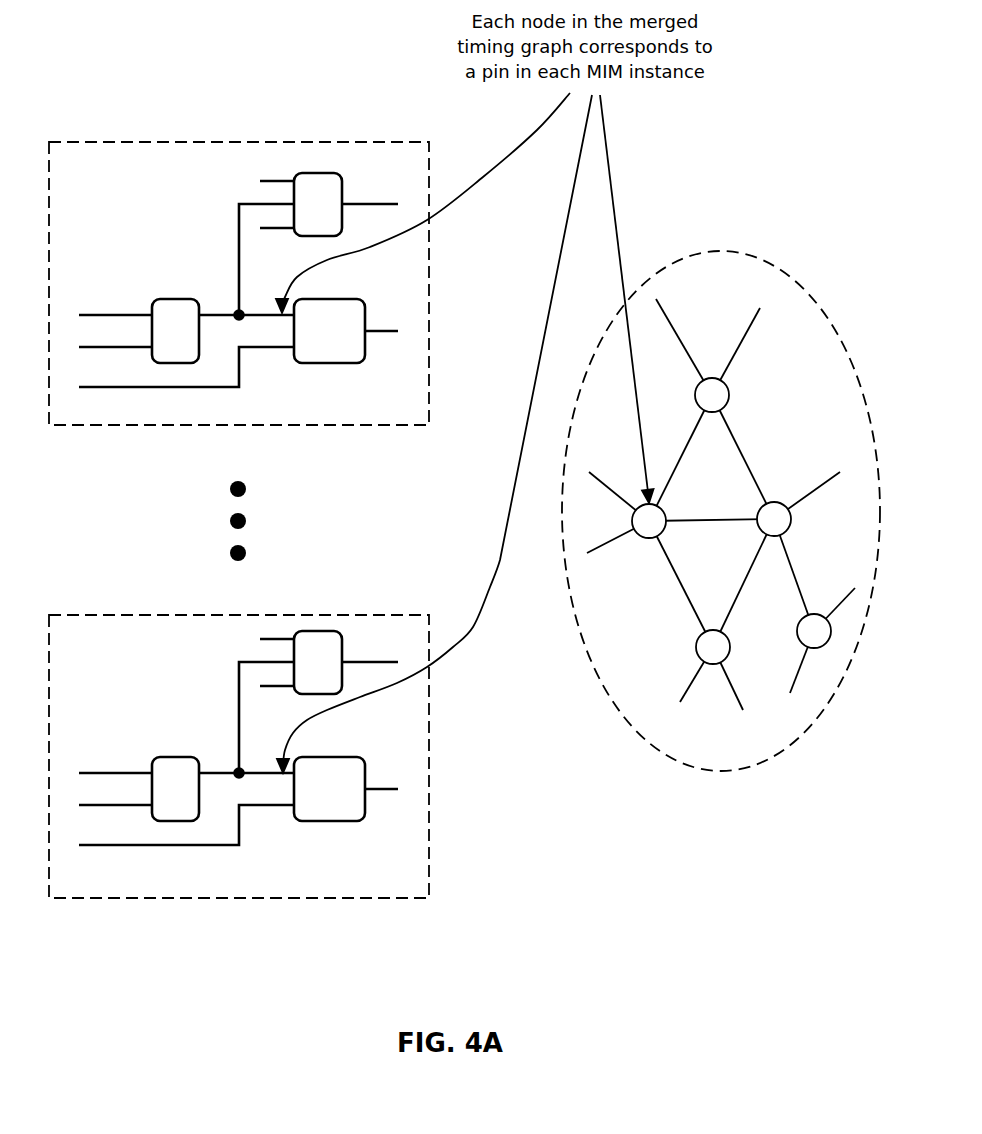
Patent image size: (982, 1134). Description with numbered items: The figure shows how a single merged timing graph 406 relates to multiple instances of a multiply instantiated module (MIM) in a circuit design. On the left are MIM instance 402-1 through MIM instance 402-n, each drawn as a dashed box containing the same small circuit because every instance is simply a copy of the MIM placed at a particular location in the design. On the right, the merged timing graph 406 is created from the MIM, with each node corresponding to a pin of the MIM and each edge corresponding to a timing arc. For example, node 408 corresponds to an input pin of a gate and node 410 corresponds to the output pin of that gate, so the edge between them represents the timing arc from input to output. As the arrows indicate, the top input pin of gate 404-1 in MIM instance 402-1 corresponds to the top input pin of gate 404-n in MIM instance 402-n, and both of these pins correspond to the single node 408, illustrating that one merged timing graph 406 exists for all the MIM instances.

The MIM instance 402-1 is at (239, 270).
The MIM instance 402-n is at (239, 770).
The gate 404-1 is at (329, 331).
The gate 404-n is at (329, 789).
The merged timing graph 406 is at (721, 539).
The node 408 is at (649, 536).
The node 410 is at (731, 395).